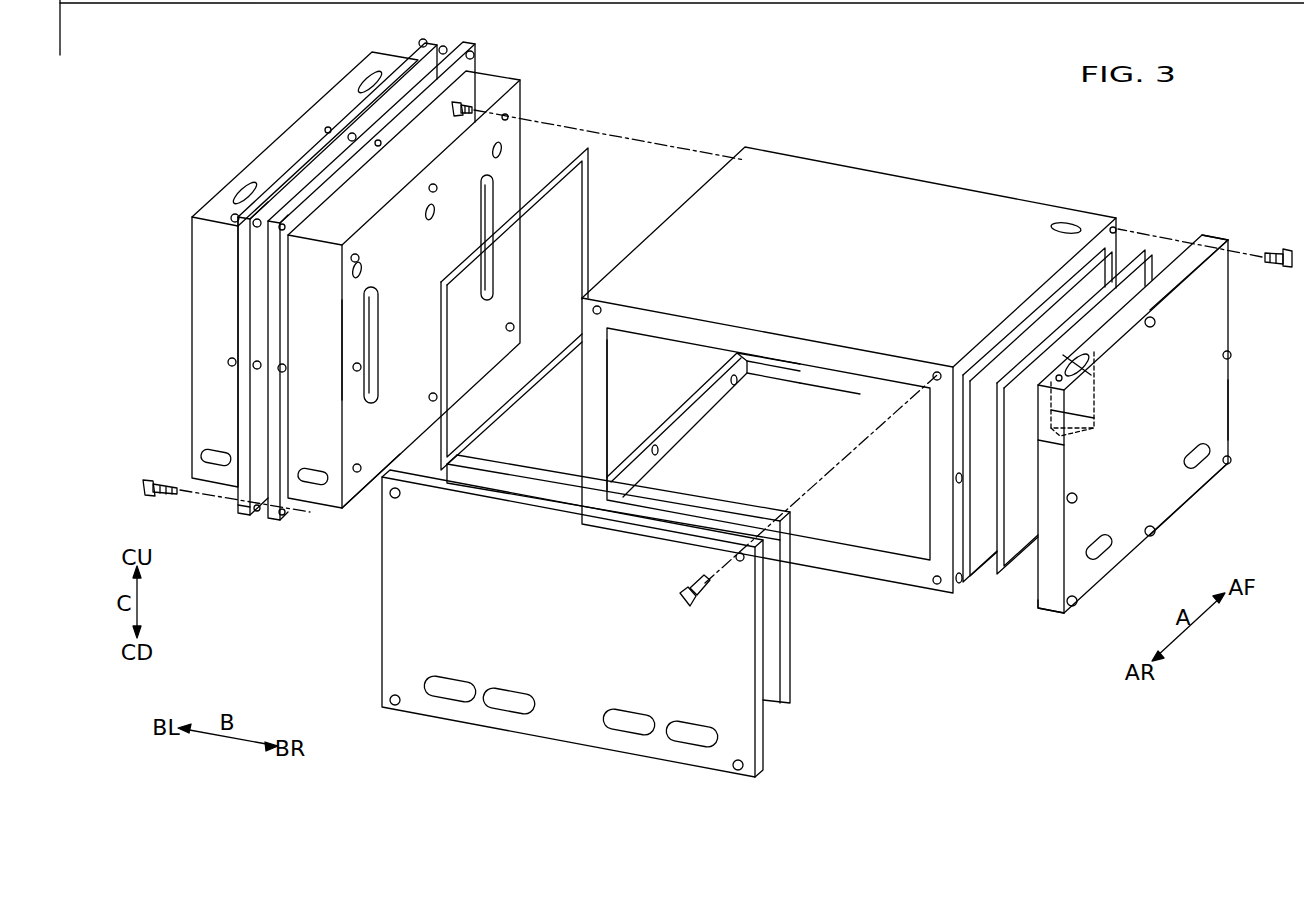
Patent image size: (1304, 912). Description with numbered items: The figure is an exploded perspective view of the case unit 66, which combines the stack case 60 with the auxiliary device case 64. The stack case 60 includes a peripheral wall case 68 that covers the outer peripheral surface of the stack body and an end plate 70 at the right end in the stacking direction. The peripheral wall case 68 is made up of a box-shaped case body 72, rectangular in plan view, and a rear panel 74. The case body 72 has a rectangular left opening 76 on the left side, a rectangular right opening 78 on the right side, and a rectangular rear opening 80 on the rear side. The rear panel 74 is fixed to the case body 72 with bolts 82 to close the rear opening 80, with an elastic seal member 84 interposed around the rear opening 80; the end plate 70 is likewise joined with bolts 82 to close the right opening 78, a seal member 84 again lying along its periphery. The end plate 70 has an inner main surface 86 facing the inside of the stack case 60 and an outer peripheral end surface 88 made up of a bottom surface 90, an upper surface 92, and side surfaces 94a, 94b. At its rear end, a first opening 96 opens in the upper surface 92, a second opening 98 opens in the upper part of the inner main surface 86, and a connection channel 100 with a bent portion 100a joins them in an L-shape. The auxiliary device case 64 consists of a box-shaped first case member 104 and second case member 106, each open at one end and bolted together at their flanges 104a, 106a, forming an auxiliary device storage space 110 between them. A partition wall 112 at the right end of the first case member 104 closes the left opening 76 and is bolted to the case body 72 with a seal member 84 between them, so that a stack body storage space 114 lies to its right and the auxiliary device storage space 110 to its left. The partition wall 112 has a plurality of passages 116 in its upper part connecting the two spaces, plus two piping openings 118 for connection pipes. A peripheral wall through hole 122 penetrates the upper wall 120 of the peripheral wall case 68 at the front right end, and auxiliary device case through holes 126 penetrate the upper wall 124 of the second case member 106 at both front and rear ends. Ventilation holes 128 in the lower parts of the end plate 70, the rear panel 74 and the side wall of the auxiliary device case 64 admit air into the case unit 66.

The stack case 60 is at (866, 156).
The auxiliary device case 64 is at (334, 50).
The case unit 66 is at (722, 80).
The peripheral wall case 68 is at (842, 680).
The end plate 70 is at (1210, 331).
The case body 72 is at (820, 562).
The rear panel 74 is at (760, 732).
The left opening 76 is at (610, 390).
The right opening 78 is at (968, 440).
The rear opening 80 is at (780, 364).
The bolts 82 is at (452, 110).
The seal member 84 is at (593, 185).
The inner main surface 86 is at (1036, 606).
The outer peripheral end surface 88 is at (1212, 236).
The bottom surface 90 is at (1190, 498).
The upper surface 92 is at (1185, 262).
The side surface 94a is at (1232, 425).
The side surface 94b is at (1052, 462).
The first opening 96 is at (1060, 345).
The second opening 98 is at (1055, 416).
The connection channel 100 is at (1085, 387).
The bent portion 100a is at (1096, 420).
The first case member 104 is at (493, 82).
The flange 104a is at (272, 522).
The second case member 106 is at (390, 60).
The flange 106a is at (245, 516).
The auxiliary device storage space 110 is at (363, 455).
The partition wall 112 is at (510, 262).
The stack body storage space 114 is at (865, 530).
The passages 116 is at (503, 150).
The piping openings 118 is at (497, 287).
The upper wall 120 is at (932, 200).
The peripheral wall through hole 122 is at (1066, 222).
The upper wall 124 is at (297, 145).
The auxiliary device case through holes 126 is at (365, 80).
The ventilation holes 128 is at (205, 456).